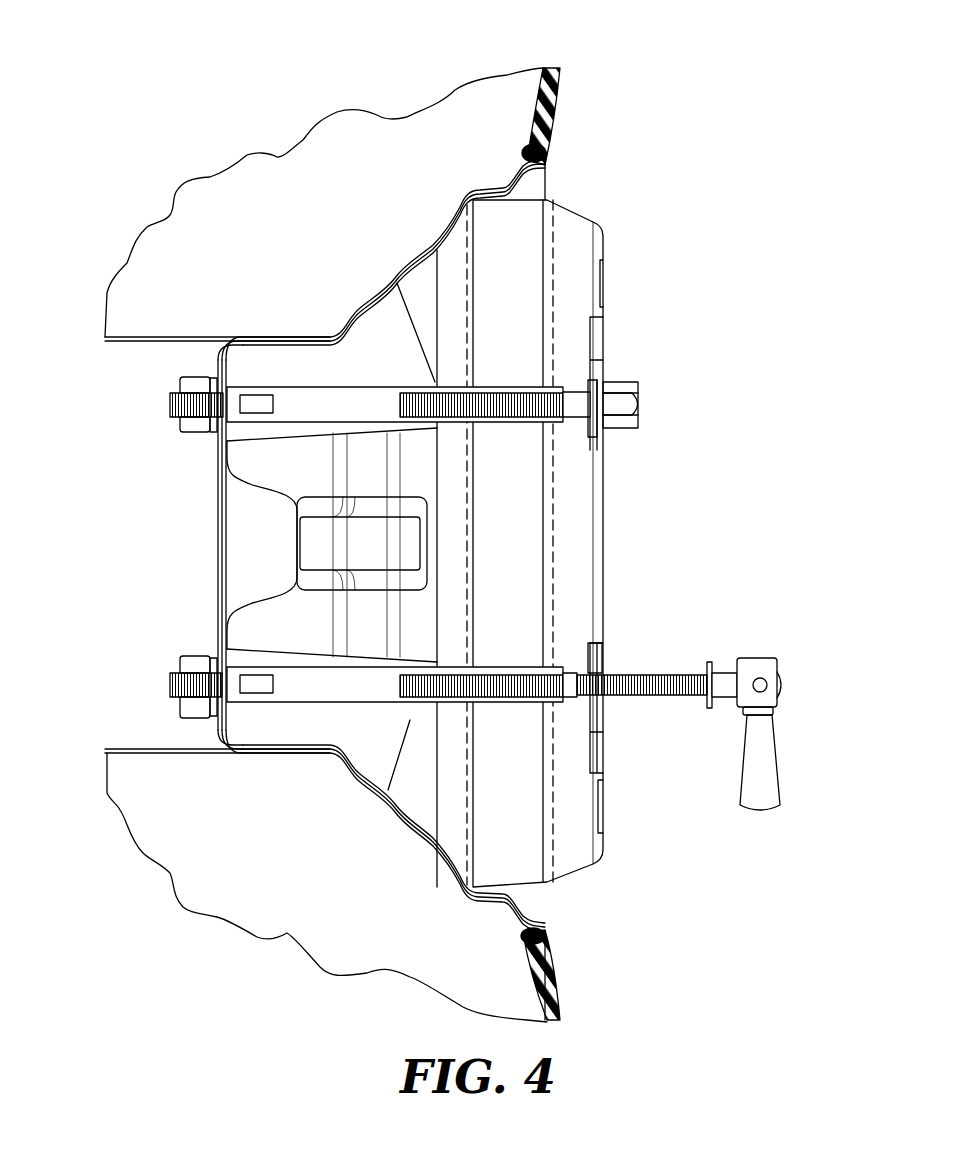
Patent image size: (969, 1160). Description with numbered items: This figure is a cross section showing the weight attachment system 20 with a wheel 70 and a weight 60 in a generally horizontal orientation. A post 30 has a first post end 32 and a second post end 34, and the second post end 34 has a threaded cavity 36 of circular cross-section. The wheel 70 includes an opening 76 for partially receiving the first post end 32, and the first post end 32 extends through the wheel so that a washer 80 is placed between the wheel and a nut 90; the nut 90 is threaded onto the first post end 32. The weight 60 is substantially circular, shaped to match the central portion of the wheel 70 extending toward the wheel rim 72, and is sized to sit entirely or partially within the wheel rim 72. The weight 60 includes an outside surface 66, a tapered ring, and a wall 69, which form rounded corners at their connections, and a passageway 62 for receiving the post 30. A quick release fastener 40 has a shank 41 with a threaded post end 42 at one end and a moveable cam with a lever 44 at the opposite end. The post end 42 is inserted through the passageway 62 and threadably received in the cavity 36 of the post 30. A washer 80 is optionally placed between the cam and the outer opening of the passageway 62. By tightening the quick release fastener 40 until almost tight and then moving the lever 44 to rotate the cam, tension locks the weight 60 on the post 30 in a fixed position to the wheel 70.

The weight attachment system 20 is at (177, 114).
The post 30 is at (305, 703).
The first post end 32 is at (167, 672).
The second post end 34 is at (378, 810).
The cavity 36 is at (493, 693).
The quick release fastener 40 is at (717, 672).
The shank 41 is at (728, 698).
The post end 42 is at (620, 697).
The lever 44 is at (780, 782).
The weight 60 is at (520, 224).
The passageway 62 is at (563, 658).
The outside surface 66 is at (607, 840).
The wall 69 is at (573, 873).
The wheel 70 is at (560, 983).
The wheel rim 72 is at (487, 903).
The opening 76 is at (213, 433).
The washer 80 is at (215, 716).
The nut 90 is at (188, 656).